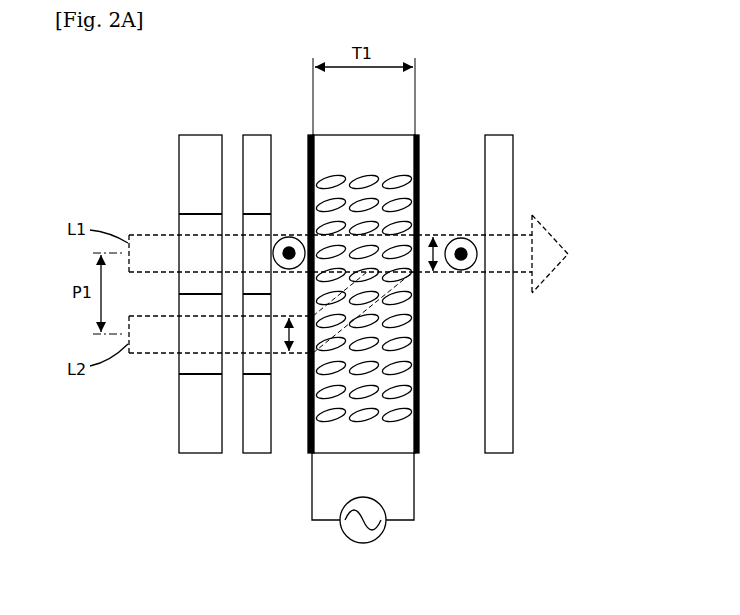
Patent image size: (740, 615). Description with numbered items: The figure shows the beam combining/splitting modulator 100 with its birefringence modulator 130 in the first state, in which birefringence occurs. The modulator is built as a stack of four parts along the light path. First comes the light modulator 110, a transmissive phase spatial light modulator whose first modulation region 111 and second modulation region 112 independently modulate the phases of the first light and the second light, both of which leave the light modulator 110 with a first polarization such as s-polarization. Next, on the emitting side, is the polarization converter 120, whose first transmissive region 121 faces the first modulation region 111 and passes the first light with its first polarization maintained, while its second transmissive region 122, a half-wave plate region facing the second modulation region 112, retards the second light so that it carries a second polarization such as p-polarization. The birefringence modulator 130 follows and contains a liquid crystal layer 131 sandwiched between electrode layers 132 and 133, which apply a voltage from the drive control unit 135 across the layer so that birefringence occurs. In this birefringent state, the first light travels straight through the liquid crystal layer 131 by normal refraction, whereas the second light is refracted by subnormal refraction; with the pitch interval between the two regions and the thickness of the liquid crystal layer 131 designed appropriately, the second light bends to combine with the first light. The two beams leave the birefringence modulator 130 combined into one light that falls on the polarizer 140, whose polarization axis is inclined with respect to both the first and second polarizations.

The beam combining/splitting modulator 100 is at (549, 114).
The light modulator 110 is at (204, 131).
The first modulation region 111 is at (186, 220).
The second modulation region 112 is at (184, 366).
The polarization converter 120 is at (250, 131).
The first transmissive region 121 is at (250, 221).
The second transmissive region 122 is at (248, 366).
The birefringence modulator 130 is at (365, 131).
The liquid crystal layer 131 is at (383, 446).
The electrode layer 132 is at (310, 455).
The electrode layer 133 is at (419, 455).
The drive control unit 135 is at (346, 540).
The polarizer 140 is at (500, 134).